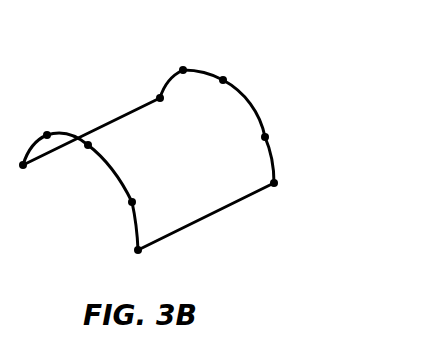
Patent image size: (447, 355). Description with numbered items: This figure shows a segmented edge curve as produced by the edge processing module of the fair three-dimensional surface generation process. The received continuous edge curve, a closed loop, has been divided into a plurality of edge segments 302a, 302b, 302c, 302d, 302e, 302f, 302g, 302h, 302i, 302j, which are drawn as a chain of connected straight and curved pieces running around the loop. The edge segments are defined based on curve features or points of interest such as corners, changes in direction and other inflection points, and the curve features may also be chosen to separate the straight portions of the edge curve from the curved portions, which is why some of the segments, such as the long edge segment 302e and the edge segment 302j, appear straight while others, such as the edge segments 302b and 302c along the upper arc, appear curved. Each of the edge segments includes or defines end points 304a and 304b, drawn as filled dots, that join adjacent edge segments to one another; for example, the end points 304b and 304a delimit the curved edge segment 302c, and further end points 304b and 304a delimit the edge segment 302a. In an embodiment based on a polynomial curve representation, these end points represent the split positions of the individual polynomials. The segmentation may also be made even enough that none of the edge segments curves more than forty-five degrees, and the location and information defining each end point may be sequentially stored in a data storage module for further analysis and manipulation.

The edge segment 302a is at (272, 162).
The edge segment 302b is at (252, 113).
The edge segment 302c is at (202, 65).
The edge segment 302d is at (167, 80).
The edge segment 302e is at (140, 107).
The edge segment 302f is at (30, 154).
The edge segment 302g is at (77, 142).
The edge segment 302h is at (102, 158).
The edge segment 302i is at (137, 217).
The edge segment 302j is at (224, 210).
The end point 304a is at (227, 77).
The end point 304b is at (183, 66).